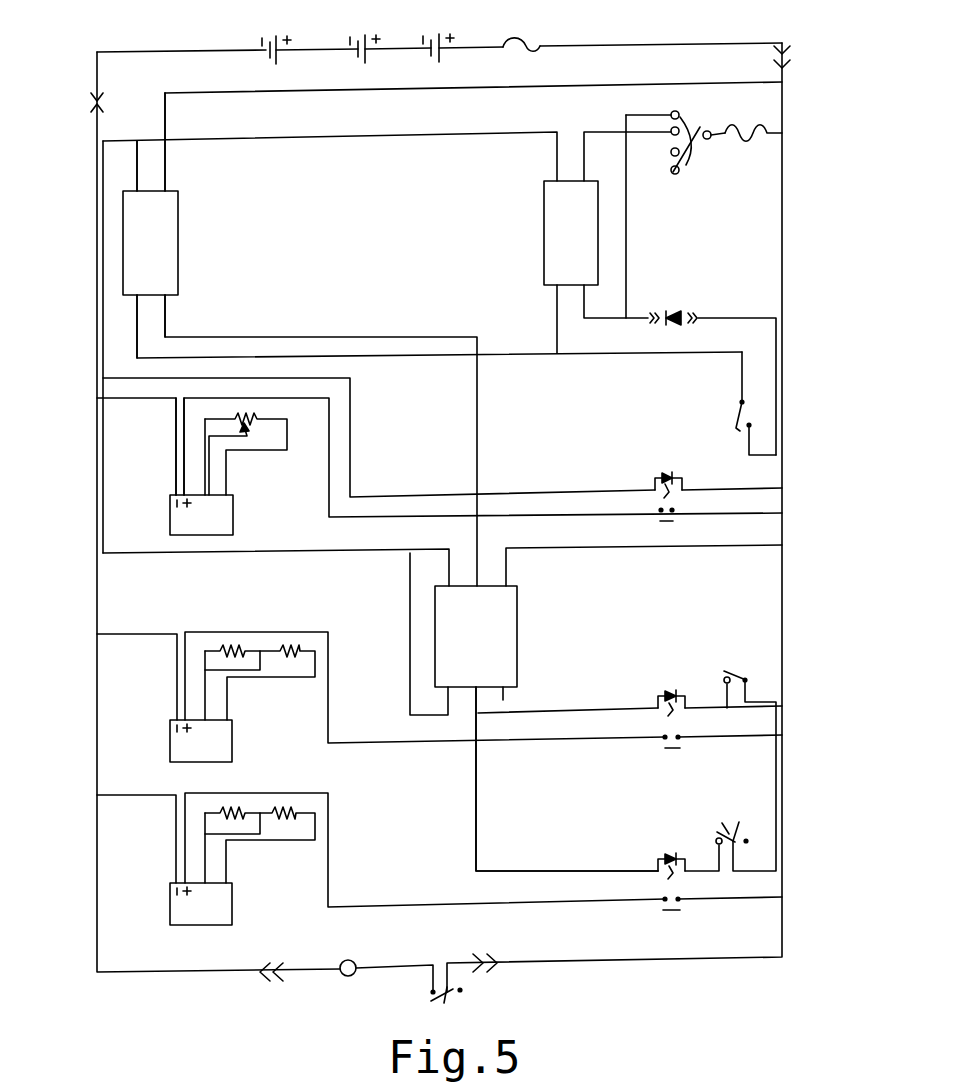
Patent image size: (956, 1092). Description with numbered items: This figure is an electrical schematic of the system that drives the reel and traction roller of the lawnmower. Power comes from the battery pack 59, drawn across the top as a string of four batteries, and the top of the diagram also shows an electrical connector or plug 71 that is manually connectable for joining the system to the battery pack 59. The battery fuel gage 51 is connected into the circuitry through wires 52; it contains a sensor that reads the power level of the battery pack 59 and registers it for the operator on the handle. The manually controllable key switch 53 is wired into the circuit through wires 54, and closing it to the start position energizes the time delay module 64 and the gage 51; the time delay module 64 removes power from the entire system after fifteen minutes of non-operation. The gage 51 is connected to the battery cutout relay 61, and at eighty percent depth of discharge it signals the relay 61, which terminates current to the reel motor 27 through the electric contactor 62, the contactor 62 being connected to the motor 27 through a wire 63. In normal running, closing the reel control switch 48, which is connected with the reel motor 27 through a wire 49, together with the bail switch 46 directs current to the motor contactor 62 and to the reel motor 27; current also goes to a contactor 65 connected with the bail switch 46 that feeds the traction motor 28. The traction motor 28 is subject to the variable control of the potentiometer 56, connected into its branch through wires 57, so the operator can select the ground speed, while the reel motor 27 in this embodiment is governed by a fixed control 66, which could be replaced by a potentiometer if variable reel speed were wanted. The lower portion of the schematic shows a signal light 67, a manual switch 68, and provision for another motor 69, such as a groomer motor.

The battery pack 59 is at (391, 36).
The electrical connector or plug 71 is at (90, 108).
The wires 52 is at (137, 172).
The battery fuel gage 51 is at (160, 272).
The time delay module 64 is at (543, 208).
The wires 54 is at (607, 133).
The key switch 53 is at (699, 157).
The potentiometer 56 is at (263, 413).
The wires 57 is at (176, 478).
The traction motor 28 is at (228, 516).
The bail switch 46 is at (731, 406).
The contactor 65 is at (678, 520).
The wire 49 is at (775, 608).
The switch 48 is at (748, 664).
The battery cutout relay 61 is at (510, 663).
The wire 63 is at (540, 742).
The electric contactor 62 is at (656, 748).
The fixed control 66 is at (284, 644).
The reel motor 27 is at (228, 733).
The another motor 69 is at (222, 915).
The signal light 67 is at (354, 959).
The manual switch 68 is at (464, 983).